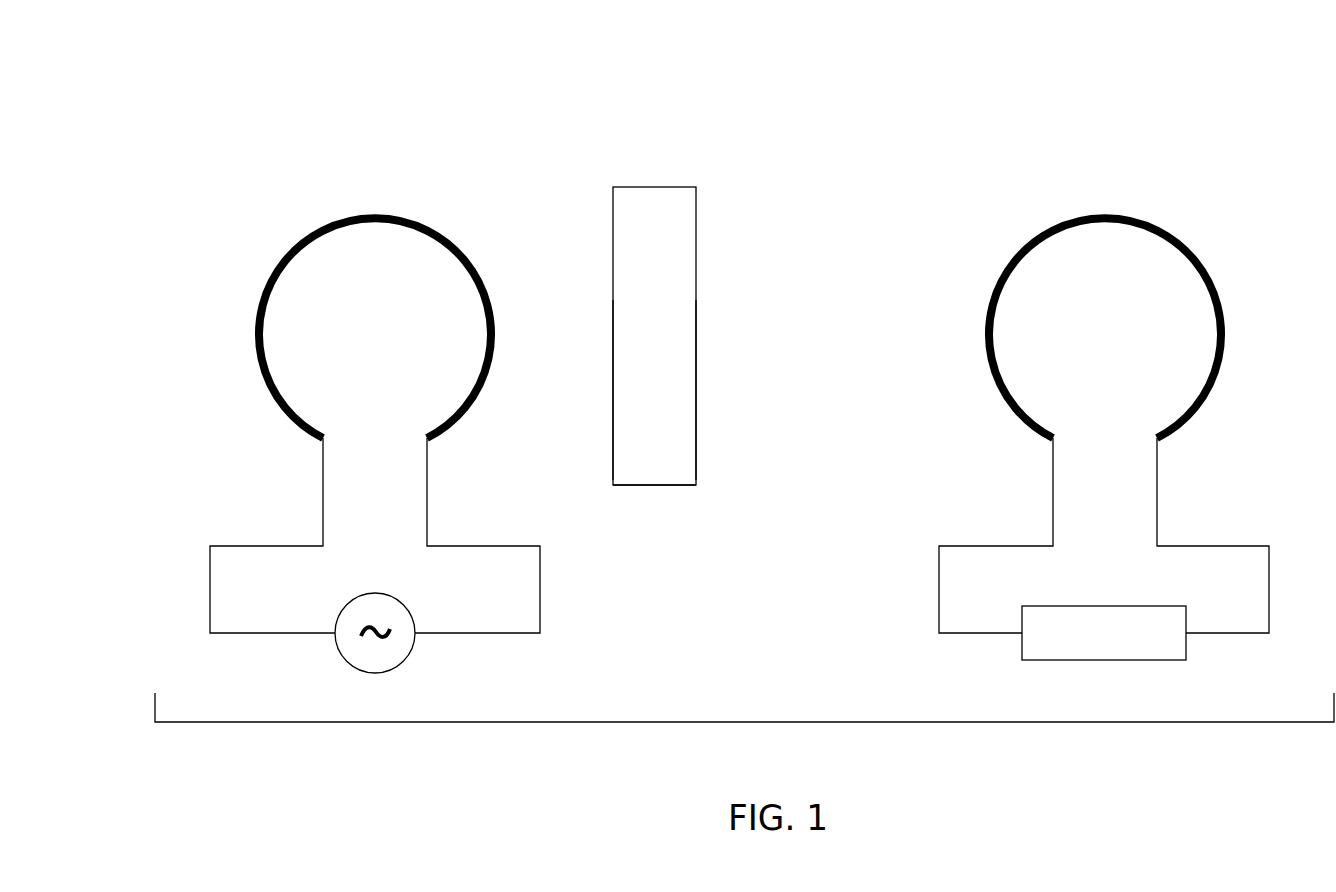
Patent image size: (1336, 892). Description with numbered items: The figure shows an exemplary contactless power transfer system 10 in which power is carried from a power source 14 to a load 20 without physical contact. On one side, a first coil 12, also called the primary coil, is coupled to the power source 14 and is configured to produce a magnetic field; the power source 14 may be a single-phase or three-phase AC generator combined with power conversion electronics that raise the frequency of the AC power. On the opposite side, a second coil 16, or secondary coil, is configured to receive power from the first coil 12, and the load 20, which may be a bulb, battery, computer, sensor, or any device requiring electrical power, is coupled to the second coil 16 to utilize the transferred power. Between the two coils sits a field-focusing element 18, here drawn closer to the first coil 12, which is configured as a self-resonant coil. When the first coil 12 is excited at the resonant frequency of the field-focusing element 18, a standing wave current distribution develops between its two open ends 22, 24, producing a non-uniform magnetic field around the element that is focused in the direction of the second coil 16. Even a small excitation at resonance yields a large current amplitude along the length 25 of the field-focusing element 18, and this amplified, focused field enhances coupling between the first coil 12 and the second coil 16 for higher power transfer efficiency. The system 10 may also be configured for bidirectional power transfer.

The contactless power transfer system 10 is at (276, 81).
The first coil 12 is at (457, 240).
The power source 14 is at (339, 611).
The second coil 16 is at (1207, 262).
The field-focusing element 18 is at (658, 186).
The load 20 is at (1021, 613).
The open end 22 is at (613, 397).
The open end 24 is at (696, 362).
The length 25 is at (672, 487).